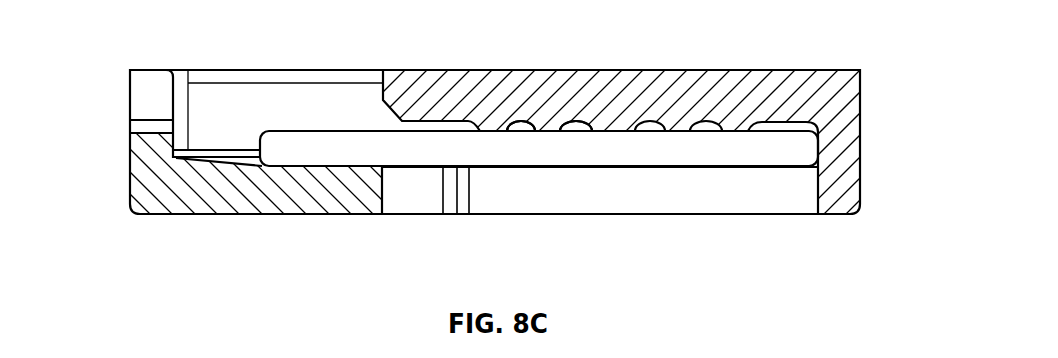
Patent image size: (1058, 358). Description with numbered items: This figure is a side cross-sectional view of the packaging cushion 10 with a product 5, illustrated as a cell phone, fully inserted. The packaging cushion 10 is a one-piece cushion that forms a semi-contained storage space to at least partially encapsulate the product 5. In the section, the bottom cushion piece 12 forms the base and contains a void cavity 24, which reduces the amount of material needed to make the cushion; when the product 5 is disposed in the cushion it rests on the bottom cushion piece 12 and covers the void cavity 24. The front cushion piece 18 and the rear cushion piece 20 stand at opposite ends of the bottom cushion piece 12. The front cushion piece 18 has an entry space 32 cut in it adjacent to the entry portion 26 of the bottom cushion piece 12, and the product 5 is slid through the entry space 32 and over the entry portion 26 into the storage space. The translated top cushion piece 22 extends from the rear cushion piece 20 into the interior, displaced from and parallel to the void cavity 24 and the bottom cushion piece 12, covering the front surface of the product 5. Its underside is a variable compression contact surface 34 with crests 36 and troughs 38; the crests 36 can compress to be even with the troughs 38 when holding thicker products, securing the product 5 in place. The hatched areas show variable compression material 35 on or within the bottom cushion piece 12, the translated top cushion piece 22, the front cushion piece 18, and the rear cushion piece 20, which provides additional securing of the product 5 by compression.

The product 5 is at (744, 160).
The packaging cushion 10 is at (849, 39).
The bottom cushion piece 12 is at (203, 215).
The front cushion piece 18 is at (130, 120).
The rear cushion piece 20 is at (860, 132).
The translated top cushion piece 22 is at (733, 70).
The void cavity 24 is at (666, 190).
The entry portion 26 is at (222, 158).
The entry space 32 is at (205, 120).
The variable compression contact surface 34 is at (410, 123).
The variable compression material 35 is at (843, 91).
The crests 36 is at (487, 131).
The troughs 38 is at (518, 128).